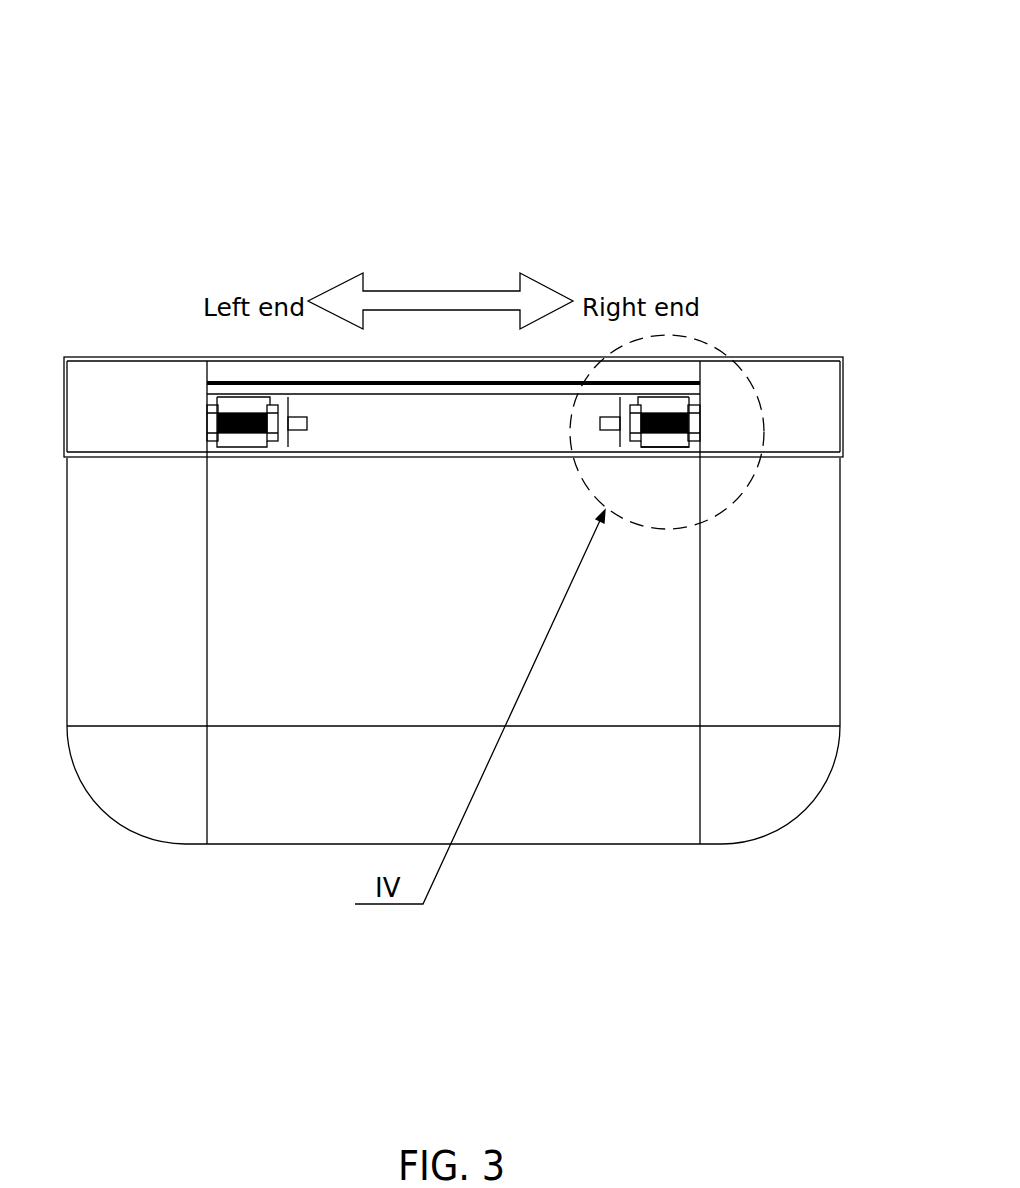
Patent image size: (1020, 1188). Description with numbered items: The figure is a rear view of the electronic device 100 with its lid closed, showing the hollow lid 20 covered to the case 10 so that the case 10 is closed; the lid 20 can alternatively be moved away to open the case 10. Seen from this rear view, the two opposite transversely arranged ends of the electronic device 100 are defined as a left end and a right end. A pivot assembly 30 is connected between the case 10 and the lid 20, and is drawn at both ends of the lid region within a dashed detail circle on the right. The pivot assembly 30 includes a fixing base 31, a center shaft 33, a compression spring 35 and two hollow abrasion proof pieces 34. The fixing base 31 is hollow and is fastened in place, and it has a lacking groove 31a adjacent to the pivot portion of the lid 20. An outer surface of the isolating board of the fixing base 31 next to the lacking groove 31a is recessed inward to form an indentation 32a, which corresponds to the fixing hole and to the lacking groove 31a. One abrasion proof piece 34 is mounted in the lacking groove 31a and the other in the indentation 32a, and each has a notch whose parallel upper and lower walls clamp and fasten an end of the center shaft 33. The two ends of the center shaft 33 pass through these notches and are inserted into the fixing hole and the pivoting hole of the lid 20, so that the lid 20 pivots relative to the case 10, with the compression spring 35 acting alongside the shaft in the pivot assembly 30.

The electronic device 100 is at (82, 35).
The case 10 is at (822, 564).
The hollow lid 20 is at (181, 357).
The pivot assembly 30 is at (430, 434).
The fixing base 31 is at (297, 447).
The lacking groove 31a is at (705, 440).
The indentation 32a is at (641, 441).
The center shaft 33 is at (302, 430).
The abrasion proof pieces 34 is at (641, 437).
The compression spring 35 is at (250, 447).